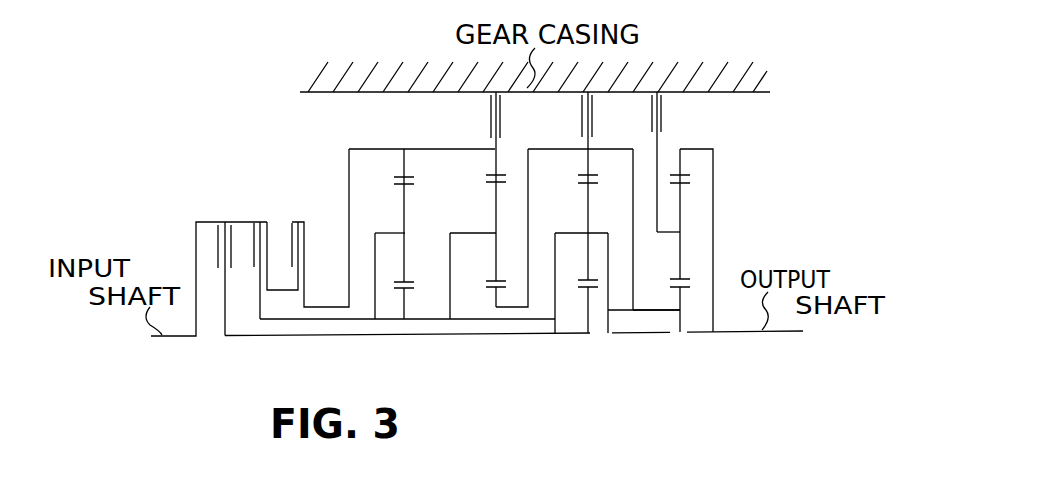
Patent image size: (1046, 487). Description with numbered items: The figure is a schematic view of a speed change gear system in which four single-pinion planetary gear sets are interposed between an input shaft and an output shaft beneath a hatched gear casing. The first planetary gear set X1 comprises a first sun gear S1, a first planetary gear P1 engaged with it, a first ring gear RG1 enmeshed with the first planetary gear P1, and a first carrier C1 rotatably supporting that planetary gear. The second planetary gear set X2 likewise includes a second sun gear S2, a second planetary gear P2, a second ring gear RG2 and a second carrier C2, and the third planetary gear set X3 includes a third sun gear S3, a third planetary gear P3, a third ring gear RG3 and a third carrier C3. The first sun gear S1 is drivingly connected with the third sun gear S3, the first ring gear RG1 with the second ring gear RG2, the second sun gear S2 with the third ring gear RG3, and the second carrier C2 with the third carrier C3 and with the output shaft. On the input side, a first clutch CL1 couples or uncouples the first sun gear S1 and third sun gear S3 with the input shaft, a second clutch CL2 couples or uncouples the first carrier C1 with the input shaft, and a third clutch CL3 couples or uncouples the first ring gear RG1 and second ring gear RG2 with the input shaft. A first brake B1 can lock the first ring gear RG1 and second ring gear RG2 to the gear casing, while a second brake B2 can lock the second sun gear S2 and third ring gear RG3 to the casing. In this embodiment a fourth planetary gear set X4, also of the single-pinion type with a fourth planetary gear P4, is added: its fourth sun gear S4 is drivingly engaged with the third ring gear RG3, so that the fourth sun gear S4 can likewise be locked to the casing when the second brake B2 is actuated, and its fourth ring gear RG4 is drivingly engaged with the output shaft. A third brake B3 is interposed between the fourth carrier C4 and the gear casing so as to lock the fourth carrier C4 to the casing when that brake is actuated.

The first clutch CL1 is at (230, 223).
The second clutch CL2 is at (268, 224).
The third clutch CL3 is at (311, 224).
The first brake B1 is at (488, 109).
The second brake B2 is at (592, 107).
The third brake B3 is at (663, 106).
The first ring gear RG1 is at (404, 168).
The second ring gear RG2 is at (497, 162).
The third ring gear RG3 is at (591, 167).
The fourth ring gear RG4 is at (682, 164).
The first carrier C1 is at (406, 233).
The second carrier C2 is at (497, 233).
The third carrier C3 is at (590, 233).
The fourth carrier C4 is at (682, 232).
The first planetary gear P1 is at (405, 258).
The second planetary gear P2 is at (496, 252).
The third planetary gear P3 is at (588, 250).
The fourth planetary gear P4 is at (678, 259).
The first sun gear S1 is at (408, 312).
The second sun gear S2 is at (496, 297).
The third sun gear S3 is at (588, 303).
The fourth sun gear S4 is at (682, 291).
The first planetary gear set X1 is at (398, 309).
The second planetary gear set X2 is at (502, 296).
The third planetary gear set X3 is at (597, 311).
The fourth planetary gear set X4 is at (669, 314).